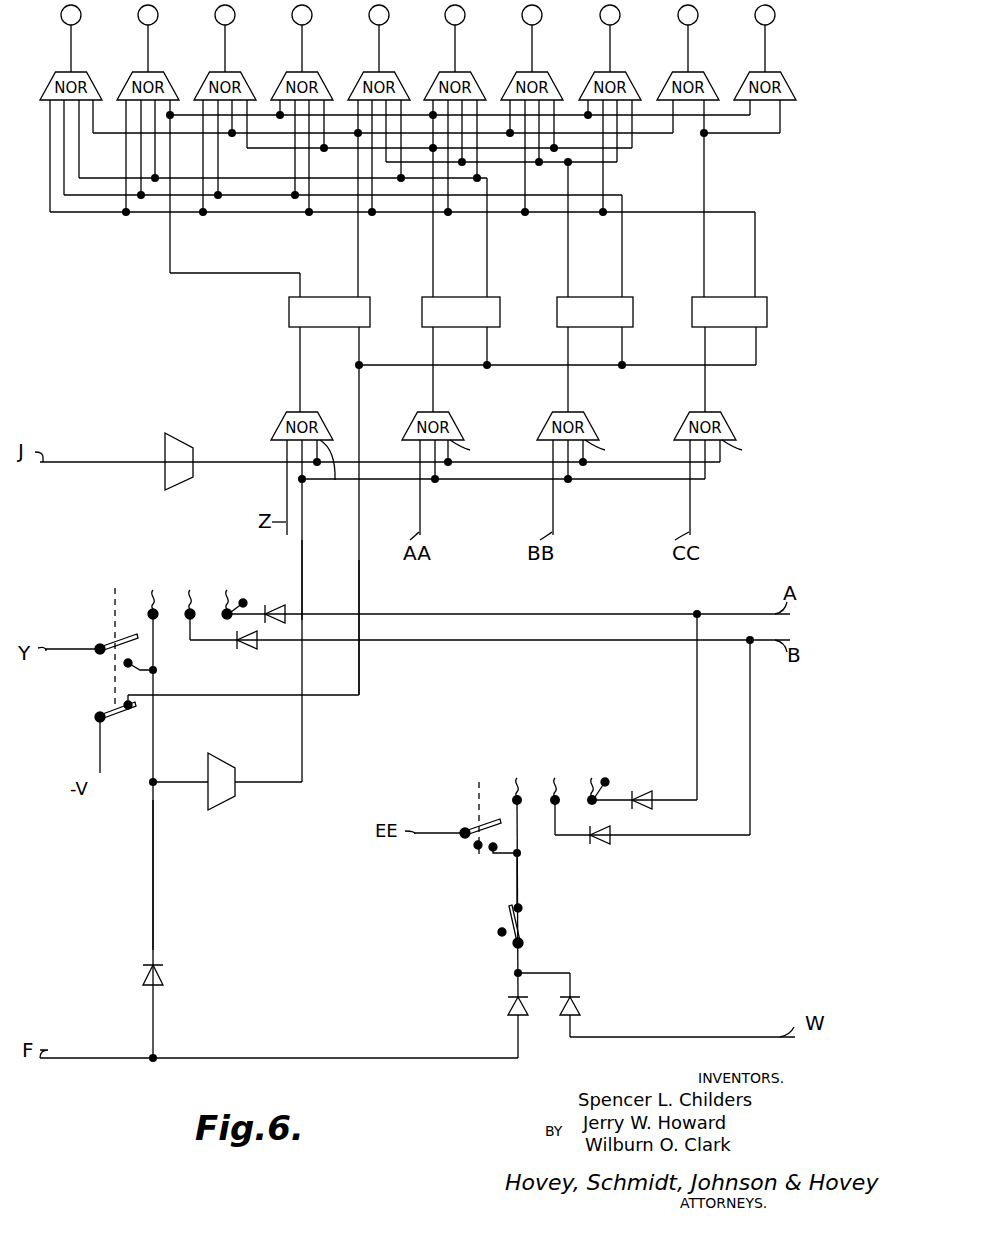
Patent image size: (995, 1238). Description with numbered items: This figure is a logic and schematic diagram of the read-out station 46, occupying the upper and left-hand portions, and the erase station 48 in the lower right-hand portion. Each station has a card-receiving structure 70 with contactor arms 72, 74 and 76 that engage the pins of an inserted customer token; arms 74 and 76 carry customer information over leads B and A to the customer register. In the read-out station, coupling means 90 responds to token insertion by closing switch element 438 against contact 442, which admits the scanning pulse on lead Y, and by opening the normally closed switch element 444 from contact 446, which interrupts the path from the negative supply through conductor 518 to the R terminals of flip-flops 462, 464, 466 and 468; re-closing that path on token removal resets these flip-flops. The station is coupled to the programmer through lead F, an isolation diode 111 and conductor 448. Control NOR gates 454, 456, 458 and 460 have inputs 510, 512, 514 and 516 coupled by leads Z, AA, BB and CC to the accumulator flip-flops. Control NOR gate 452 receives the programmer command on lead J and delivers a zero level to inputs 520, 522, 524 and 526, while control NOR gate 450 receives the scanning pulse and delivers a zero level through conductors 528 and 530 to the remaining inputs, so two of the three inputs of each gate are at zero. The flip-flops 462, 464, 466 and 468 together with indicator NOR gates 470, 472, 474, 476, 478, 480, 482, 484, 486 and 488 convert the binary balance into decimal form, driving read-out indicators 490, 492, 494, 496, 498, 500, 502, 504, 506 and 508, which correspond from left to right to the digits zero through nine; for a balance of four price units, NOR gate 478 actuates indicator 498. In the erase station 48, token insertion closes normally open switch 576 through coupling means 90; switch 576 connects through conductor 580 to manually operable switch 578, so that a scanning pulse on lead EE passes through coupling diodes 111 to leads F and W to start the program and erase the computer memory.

The indicator NOR gate 470 is at (47, 82).
The indicator NOR gate 472 is at (124, 82).
The indicator NOR gate 474 is at (201, 82).
The indicator NOR gate 476 is at (279, 82).
The indicator NOR gate 478 is at (356, 82).
The indicator NOR gate 480 is at (434, 82).
The indicator NOR gate 482 is at (511, 82).
The indicator NOR gate 484 is at (589, 82).
The indicator NOR gate 486 is at (667, 82).
The indicator NOR gate 488 is at (744, 82).
The read-out indicator 490 is at (81, 15).
The read-out indicator 492 is at (158, 15).
The read-out indicator 494 is at (235, 15).
The read-out indicator 496 is at (312, 15).
The read-out indicator 498 is at (389, 15).
The read-out indicator 500 is at (465, 15).
The read-out indicator 502 is at (542, 15).
The read-out indicator 504 is at (620, 15).
The read-out indicator 506 is at (698, 15).
The read-out indicator 508 is at (775, 15).
The flip-flop 462 is at (288, 314).
The flip-flop 464 is at (420, 305).
The flip-flop 466 is at (555, 305).
The flip-flop 468 is at (688, 305).
The read-out station 46 is at (205, 359).
The erase station 48 is at (620, 904).
The control NOR gate 452 is at (177, 445).
The control NOR gate 454 is at (330, 405).
The control NOR gate 456 is at (452, 422).
The control NOR gate 458 is at (587, 422).
The control NOR gate 460 is at (717, 422).
The input 510 is at (284, 442).
The input 512 is at (415, 442).
The input 514 is at (552, 442).
The input 516 is at (688, 443).
The conductor 518 is at (361, 592).
The input 520 is at (322, 473).
The input 522 is at (476, 438).
The input 524 is at (611, 438).
The input 526 is at (751, 453).
The conductor 528 is at (304, 574).
The conductor 530 is at (532, 482).
The card-receiving structure 70 is at (243, 603).
The contactor arm 72 is at (152, 590).
The contactor arm 74 is at (189, 590).
The contactor arm 76 is at (228, 588).
The coupling means 90 is at (113, 604).
The isolation diode 111 is at (288, 612).
The switch element 438 is at (104, 661).
The contact 442 is at (123, 669).
The switch element 444 is at (110, 720).
The contact 446 is at (141, 702).
The conductor 448 is at (150, 860).
The control NOR gate 450 is at (226, 804).
The switch 576 is at (478, 846).
The switch 578 is at (500, 934).
The conductor 580 is at (514, 881).